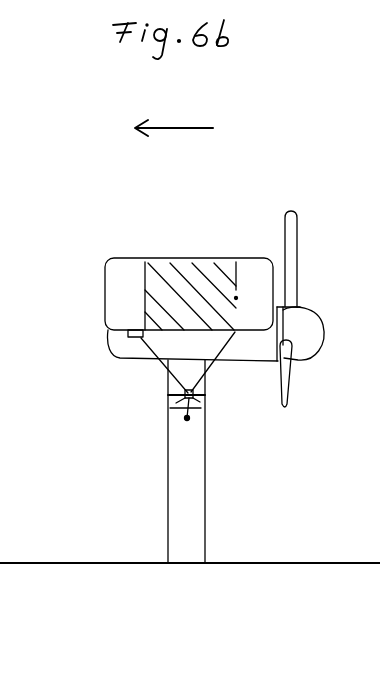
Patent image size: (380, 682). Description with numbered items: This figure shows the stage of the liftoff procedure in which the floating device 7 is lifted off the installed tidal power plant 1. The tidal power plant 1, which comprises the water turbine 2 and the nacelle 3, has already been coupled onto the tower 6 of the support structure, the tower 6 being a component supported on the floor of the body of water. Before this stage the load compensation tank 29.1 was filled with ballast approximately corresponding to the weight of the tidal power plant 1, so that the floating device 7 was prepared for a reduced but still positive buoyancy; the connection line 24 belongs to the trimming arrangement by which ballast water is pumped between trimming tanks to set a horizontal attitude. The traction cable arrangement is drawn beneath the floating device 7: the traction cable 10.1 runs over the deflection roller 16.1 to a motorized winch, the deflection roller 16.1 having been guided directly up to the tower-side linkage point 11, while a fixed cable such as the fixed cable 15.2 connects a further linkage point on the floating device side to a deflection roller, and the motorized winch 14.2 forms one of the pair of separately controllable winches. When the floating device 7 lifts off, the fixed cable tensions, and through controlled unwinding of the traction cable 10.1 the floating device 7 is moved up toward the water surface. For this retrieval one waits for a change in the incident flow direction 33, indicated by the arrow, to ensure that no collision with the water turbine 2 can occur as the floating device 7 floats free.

The tidal power plant 1 is at (308, 356).
The water turbine 2 is at (308, 321).
The nacelle 3 is at (252, 351).
The tower 6 is at (185, 502).
The floating device 7 is at (250, 273).
The traction cable 10.1 is at (150, 351).
The tower-side linkage point 11 is at (187, 418).
The motorized winch 14.2 is at (128, 338).
The fixed cable 15.2 is at (215, 362).
The deflection roller 16.1 is at (168, 395).
The connection line 24 is at (103, 267).
The load compensation tank 29.1 is at (191, 286).
The incident flow direction 33 is at (201, 130).